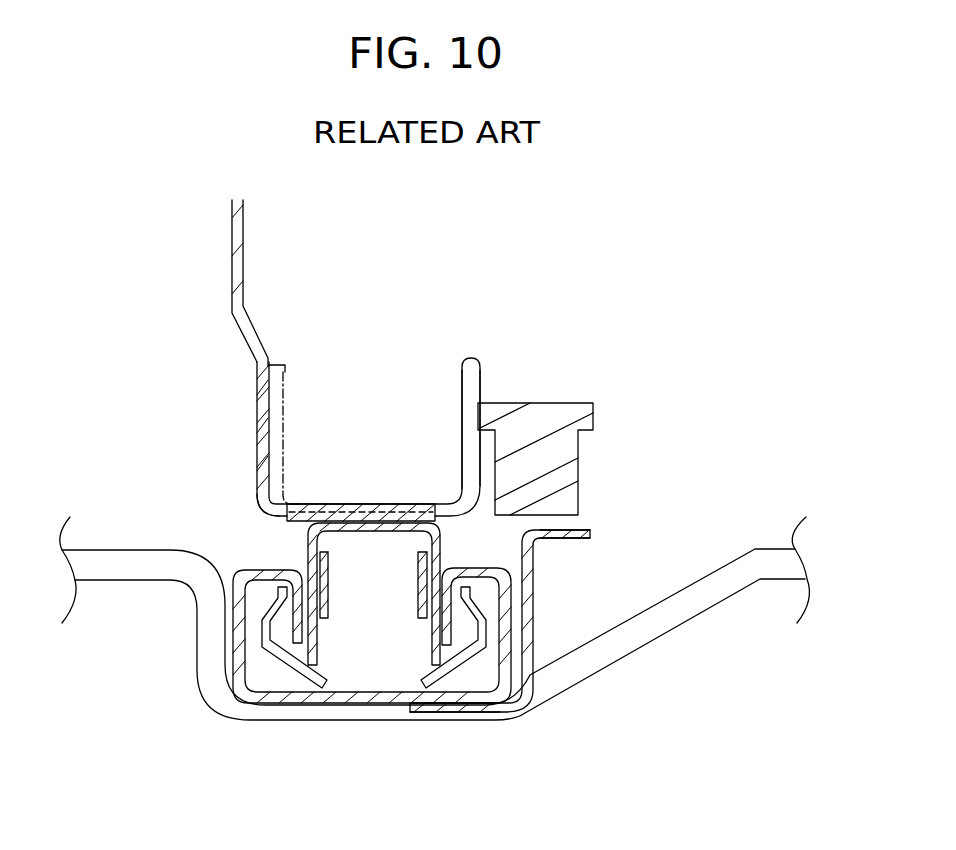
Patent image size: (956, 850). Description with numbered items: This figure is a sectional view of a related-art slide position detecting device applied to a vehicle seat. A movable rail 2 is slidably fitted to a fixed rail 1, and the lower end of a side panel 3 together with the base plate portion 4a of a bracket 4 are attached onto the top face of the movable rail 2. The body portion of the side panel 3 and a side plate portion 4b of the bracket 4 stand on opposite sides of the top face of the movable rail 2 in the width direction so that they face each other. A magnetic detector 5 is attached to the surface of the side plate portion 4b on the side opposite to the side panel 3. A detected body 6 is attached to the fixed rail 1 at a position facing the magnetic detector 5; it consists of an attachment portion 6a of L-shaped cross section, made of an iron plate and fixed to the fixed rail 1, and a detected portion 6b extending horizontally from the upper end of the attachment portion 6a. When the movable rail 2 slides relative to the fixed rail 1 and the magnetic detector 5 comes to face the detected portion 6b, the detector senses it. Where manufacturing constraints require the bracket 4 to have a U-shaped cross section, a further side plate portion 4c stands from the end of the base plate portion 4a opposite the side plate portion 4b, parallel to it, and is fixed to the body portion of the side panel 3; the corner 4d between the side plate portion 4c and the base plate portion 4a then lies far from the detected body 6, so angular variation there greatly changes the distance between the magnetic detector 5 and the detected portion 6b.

The fixed rail 1 is at (236, 628).
The movable rail 2 is at (304, 556).
The side panel 3 is at (256, 363).
The bracket 4 is at (325, 403).
The base plate portion 4a is at (340, 501).
The side plate portion 4b is at (470, 413).
The side plate portion 4c is at (283, 364).
The corner 4d is at (262, 516).
The magnetic detector 5 is at (537, 400).
The detected body 6 is at (542, 626).
The attachment portion 6a is at (470, 713).
The detected portion 6b is at (592, 532).